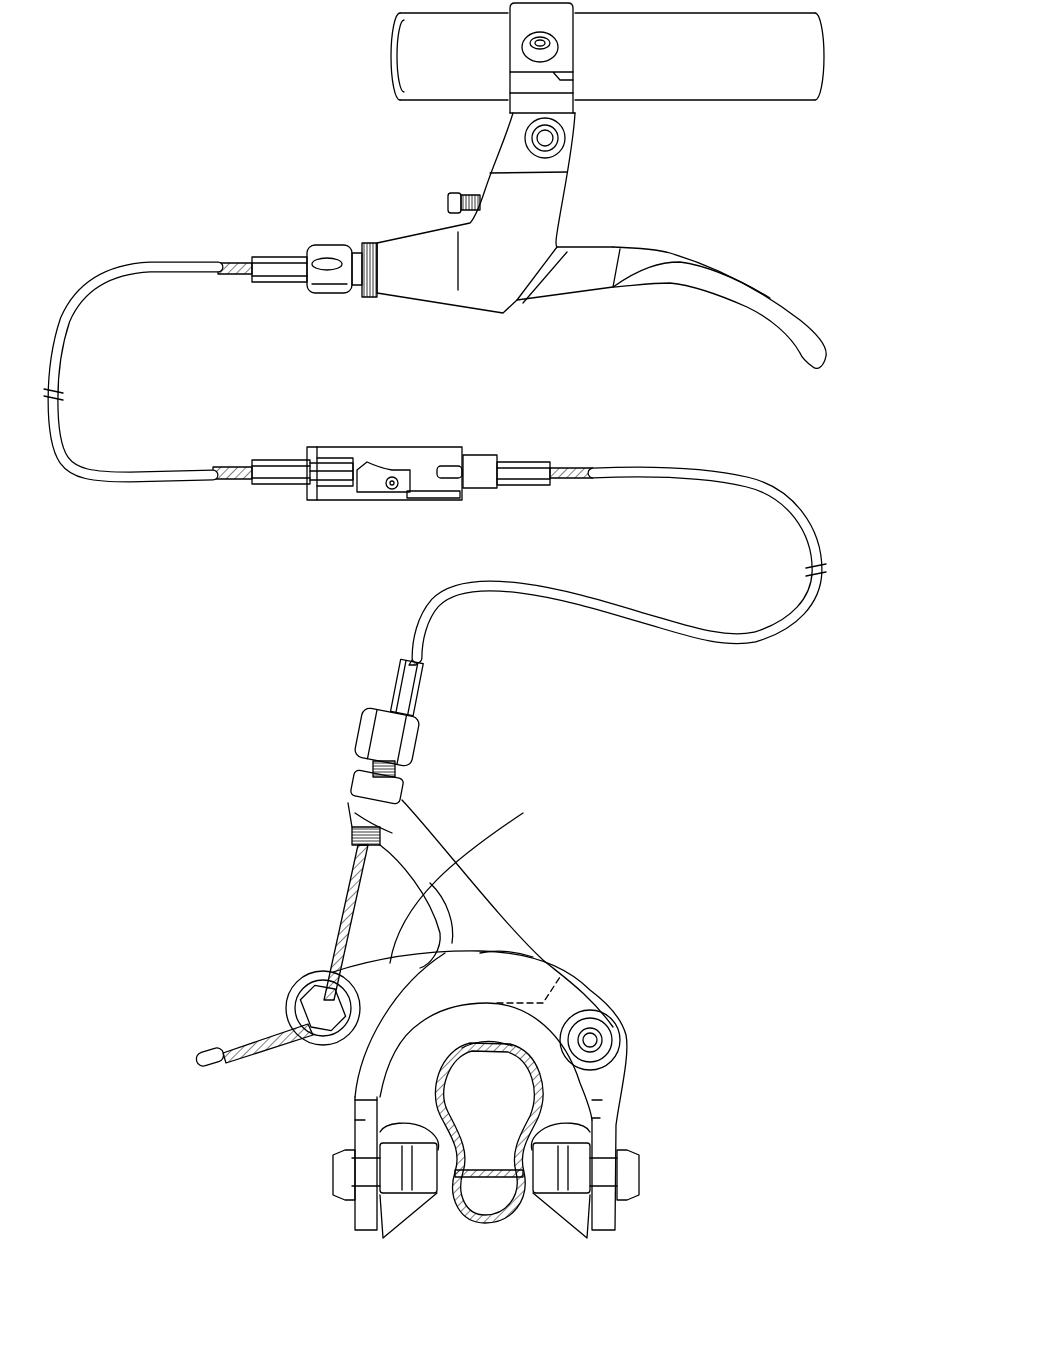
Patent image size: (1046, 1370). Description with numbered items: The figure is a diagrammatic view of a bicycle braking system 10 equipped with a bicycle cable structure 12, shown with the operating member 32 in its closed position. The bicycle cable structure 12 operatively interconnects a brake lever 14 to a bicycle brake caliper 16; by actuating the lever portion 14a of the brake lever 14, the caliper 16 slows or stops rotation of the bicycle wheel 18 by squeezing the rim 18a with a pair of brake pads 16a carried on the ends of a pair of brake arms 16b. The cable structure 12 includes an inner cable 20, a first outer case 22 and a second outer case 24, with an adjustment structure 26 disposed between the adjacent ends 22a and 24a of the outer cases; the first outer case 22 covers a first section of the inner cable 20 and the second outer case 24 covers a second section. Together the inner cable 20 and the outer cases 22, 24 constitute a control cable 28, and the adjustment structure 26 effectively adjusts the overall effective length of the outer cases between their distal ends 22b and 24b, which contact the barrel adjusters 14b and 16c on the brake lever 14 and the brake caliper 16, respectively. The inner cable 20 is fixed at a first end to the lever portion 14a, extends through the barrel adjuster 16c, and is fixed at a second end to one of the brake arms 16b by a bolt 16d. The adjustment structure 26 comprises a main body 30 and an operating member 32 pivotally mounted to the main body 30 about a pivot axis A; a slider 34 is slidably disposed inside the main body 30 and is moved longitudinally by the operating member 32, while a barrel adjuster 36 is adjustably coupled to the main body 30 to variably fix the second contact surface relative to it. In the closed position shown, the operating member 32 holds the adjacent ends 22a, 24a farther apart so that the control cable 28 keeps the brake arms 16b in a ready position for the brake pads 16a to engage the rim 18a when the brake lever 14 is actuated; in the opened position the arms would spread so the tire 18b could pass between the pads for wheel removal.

The bicycle braking system 10 is at (137, 202).
The bicycle cable structure 12 is at (357, 545).
The brake lever 14 is at (603, 290).
The lever portion 14a is at (618, 248).
The barrel adjuster 14b is at (340, 245).
The bicycle brake caliper 16 is at (597, 984).
The brake pads 16a is at (372, 1133).
The brake arms 16b is at (430, 862).
The barrel adjuster 16c is at (360, 745).
The bolt 16d is at (313, 1010).
The bicycle wheel 18 is at (450, 1225).
The rim 18a is at (505, 1226).
The tire 18b is at (481, 1042).
The inner cable 20 is at (232, 470).
The first outer case 22 is at (293, 470).
The adjacent end of first outer case 22a is at (283, 483).
The distal end of first outer case 22b is at (295, 255).
The second outer case 24 is at (515, 455).
The adjacent end of second outer case 24a is at (515, 487).
The distal end of second outer case 24b is at (417, 706).
The adjustment structure 26 is at (418, 507).
The control cable 28 is at (470, 372).
The main body 30 is at (345, 497).
The operating member 32 is at (435, 490).
The slider 34 is at (337, 478).
The barrel adjuster 36 is at (488, 492).
The pivot axis A is at (392, 490).